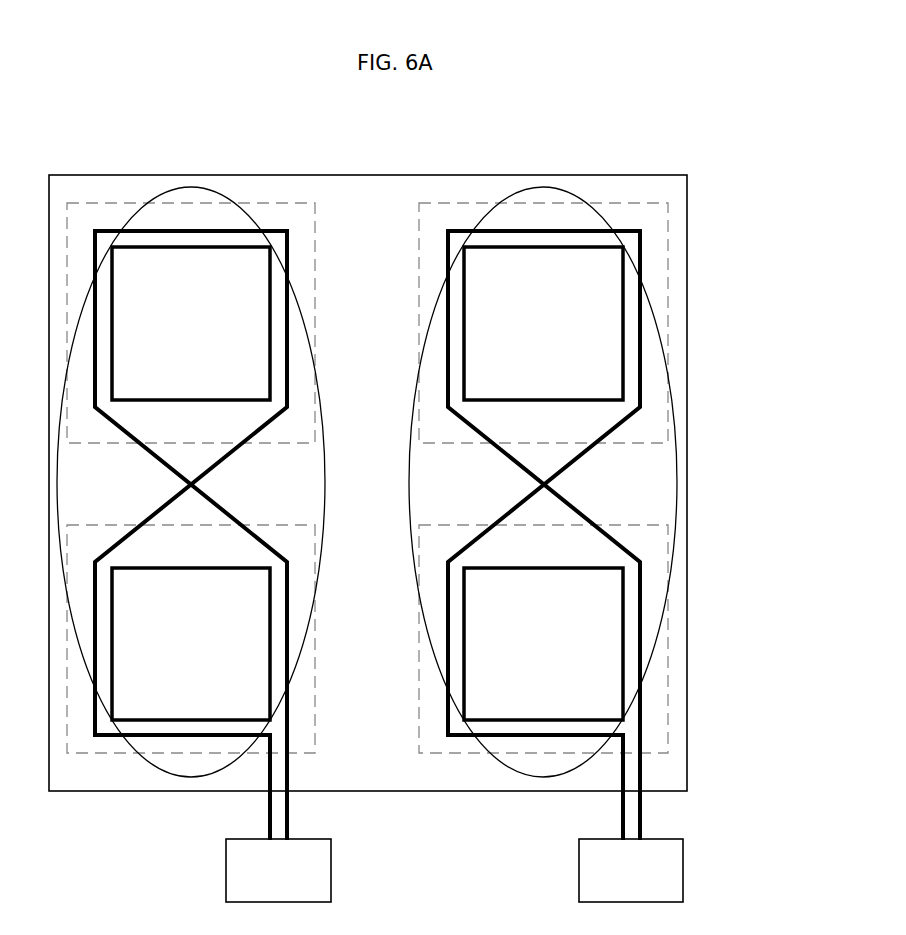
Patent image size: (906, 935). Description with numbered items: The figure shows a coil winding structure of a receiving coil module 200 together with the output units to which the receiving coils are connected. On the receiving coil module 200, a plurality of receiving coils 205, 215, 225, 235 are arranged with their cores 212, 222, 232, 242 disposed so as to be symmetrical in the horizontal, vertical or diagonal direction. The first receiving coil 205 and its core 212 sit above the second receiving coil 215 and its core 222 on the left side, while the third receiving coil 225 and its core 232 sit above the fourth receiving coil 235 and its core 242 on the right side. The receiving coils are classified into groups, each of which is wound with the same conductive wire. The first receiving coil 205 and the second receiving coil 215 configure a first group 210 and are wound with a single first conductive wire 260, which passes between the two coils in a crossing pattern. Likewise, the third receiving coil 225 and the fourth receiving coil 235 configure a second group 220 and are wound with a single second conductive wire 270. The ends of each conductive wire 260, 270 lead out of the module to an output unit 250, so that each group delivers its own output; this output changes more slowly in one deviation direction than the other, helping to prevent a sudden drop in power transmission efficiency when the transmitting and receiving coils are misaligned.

The receiving coil module 200 is at (368, 190).
The first receiving coil 205 is at (92, 203).
The first group 210 is at (190, 187).
The core 212 is at (250, 268).
The second receiving coil 215 is at (140, 755).
The second group 220 is at (543, 187).
The core 222 is at (125, 710).
The third receiving coil 225 is at (643, 203).
The core 232 is at (482, 257).
The fourth receiving coil 235 is at (443, 753).
The core 242 is at (500, 688).
The output unit 250 is at (331, 868).
The first conductive wire 260 is at (227, 458).
The second conductive wire 270 is at (580, 458).